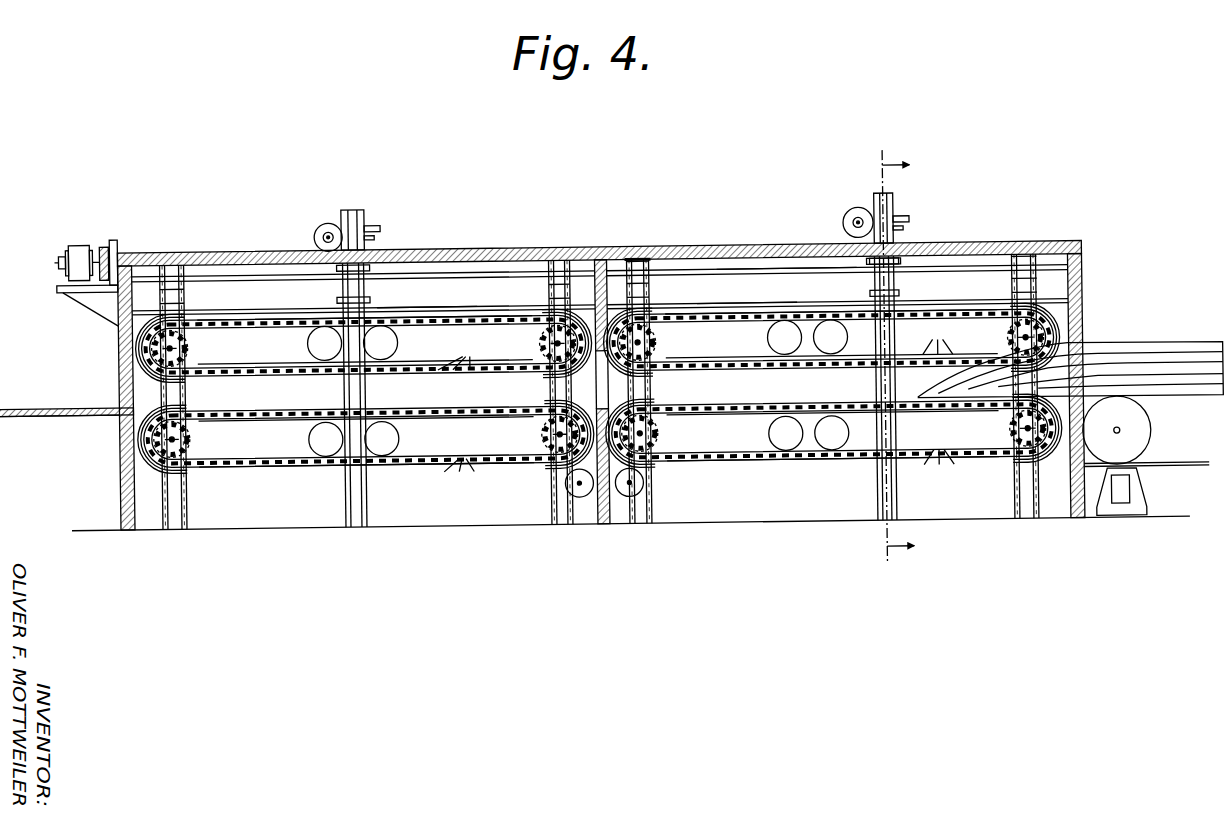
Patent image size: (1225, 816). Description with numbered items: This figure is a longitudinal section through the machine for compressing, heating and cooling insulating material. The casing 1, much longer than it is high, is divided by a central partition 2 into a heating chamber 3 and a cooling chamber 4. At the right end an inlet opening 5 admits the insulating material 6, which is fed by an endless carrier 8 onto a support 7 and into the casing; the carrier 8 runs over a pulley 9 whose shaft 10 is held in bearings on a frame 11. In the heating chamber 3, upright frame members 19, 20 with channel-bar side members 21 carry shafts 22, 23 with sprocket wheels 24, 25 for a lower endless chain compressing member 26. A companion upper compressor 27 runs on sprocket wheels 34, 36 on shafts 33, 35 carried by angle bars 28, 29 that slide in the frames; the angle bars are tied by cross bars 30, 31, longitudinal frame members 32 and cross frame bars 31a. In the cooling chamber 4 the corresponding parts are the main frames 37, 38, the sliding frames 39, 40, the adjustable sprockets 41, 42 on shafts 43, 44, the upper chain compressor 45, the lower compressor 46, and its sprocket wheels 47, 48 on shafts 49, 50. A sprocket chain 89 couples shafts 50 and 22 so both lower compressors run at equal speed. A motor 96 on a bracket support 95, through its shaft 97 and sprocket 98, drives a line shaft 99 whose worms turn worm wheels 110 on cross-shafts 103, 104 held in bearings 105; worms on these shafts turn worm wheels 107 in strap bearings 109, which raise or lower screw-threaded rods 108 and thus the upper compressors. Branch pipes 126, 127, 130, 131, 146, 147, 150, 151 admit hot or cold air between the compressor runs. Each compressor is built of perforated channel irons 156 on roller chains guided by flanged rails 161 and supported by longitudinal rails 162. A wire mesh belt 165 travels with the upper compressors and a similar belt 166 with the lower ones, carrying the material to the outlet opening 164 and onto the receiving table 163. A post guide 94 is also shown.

The casing 1 is at (478, 253).
The partition 2 is at (603, 532).
The heating chamber 3 is at (742, 308).
The cooling chamber 4 is at (432, 302).
The inlet opening 5 is at (1087, 360).
The insulating material 6 is at (1150, 355).
The support 7 is at (859, 458).
The endless carrier 8 is at (1170, 410).
The pulley 9 is at (1148, 452).
The shaft 10 is at (1119, 440).
The frame 11 is at (1142, 500).
The upright frame member 19 is at (646, 512).
The upright frame member 20 is at (1018, 510).
The side members 21 is at (653, 498).
The shaft 22 is at (662, 445).
The shaft 23 is at (1012, 447).
The sprocket wheel 24 is at (690, 462).
The sprocket wheel 25 is at (1005, 456).
The endless chain compressing member 26 is at (601, 406).
The companion compressor 27 is at (792, 312).
The angle bar 28 is at (641, 302).
The angle bar 29 is at (1033, 299).
The transverse cross bar 30 is at (638, 262).
The transverse cross bar 31 is at (1036, 266).
The cross frame bar 31a is at (898, 270).
The longitudinal frame member 32 is at (783, 276).
The shaft 33 is at (660, 347).
The sprocket wheel 34 is at (831, 340).
The shaft 35 is at (1022, 350).
The sprocket wheel 36 is at (1012, 356).
The main supporting frame 37 is at (178, 506).
The main supporting frame 38 is at (560, 515).
The sliding frame 39 is at (184, 301).
The sliding frame 40 is at (552, 302).
The adjustable sprocket 41 is at (193, 344).
The adjustable sprocket 42 is at (545, 345).
The shaft 43 is at (176, 350).
The shaft 44 is at (548, 352).
The upper chain compressor 45 is at (278, 318).
The lower compressor 46 is at (268, 413).
The sprocket wheel 47 is at (194, 441).
The sprocket wheel 48 is at (545, 438).
The shaft 49 is at (177, 441).
The shaft 50 is at (552, 447).
The sprocket chain 89 is at (566, 475).
The post guide 94 is at (614, 310).
The bracket support 95 is at (85, 306).
The motor 96 is at (82, 252).
The motor shaft 97 is at (62, 263).
The sprocket 98 is at (108, 246).
The line shaft 99 is at (118, 262).
The cross-shaft 103 is at (854, 240).
The cross-shaft 104 is at (326, 234).
The bearing 105 is at (320, 243).
The worm wheel 107 is at (375, 235).
The screw-threaded rod 108 is at (353, 213).
The strap bearing 109 is at (373, 228).
The worm wheel 110 is at (341, 228).
The branch pipe 126 is at (850, 445).
The branch pipe 127 is at (848, 345).
The branch pipe 130 is at (401, 445).
The branch pipe 131 is at (401, 348).
The branch pipe 146 is at (770, 346).
The branch pipe 147 is at (770, 442).
The branch pipe 150 is at (310, 348).
The branch pipe 151 is at (310, 443).
The channel irons 156 is at (695, 396).
The flanged rails 161 is at (285, 366).
The longitudinal rails 162 is at (599, 440).
The receiving table 163 is at (60, 434).
The outlet opening 164 is at (124, 395).
The endless wire mesh belt 165 is at (447, 313).
The wire mesh belt 166 is at (485, 400).